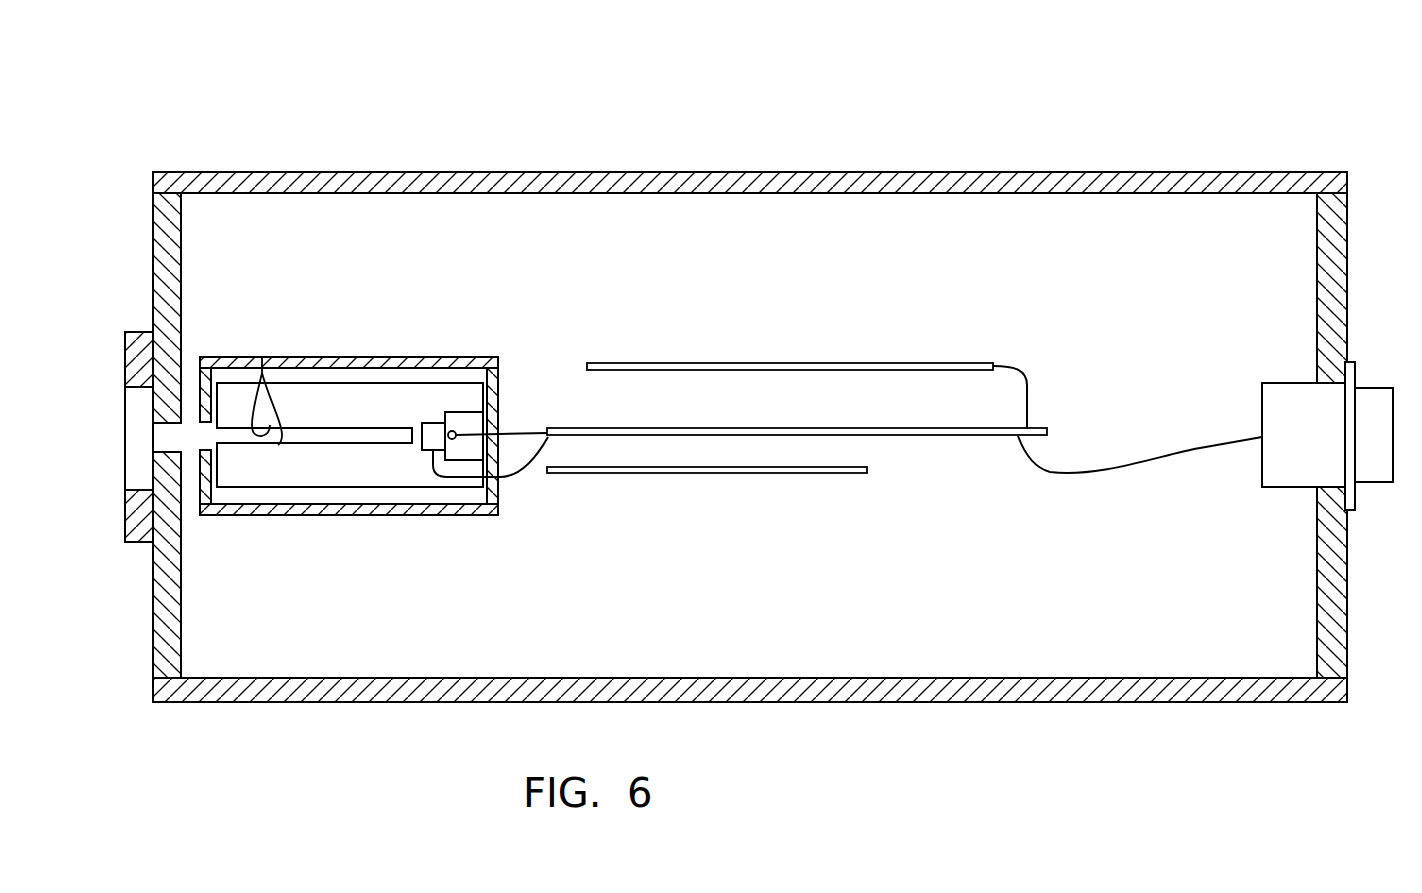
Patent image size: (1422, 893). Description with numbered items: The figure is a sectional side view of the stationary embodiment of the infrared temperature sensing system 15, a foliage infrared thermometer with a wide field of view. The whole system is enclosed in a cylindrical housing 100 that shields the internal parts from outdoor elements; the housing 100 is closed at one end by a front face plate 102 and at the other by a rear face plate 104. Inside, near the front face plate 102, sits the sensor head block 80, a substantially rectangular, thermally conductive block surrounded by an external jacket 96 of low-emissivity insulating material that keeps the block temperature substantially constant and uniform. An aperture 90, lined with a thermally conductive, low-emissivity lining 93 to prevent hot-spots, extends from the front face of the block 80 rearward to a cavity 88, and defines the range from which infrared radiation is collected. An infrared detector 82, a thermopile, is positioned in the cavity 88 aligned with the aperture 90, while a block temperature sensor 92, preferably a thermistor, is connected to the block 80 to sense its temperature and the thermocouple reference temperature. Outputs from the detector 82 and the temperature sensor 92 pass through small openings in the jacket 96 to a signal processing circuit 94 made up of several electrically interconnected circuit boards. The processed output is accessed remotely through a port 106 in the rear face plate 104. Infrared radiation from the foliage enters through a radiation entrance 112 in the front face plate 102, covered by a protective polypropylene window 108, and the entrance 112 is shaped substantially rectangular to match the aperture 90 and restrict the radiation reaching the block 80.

The infrared temperature sensing system 15 is at (1036, 120).
The sensor head block 80 is at (380, 506).
The infrared detector 82 is at (440, 423).
The cavity 88 is at (470, 418).
The aperture 90 is at (336, 432).
The block temperature sensor 92 is at (455, 430).
The lining 93 is at (262, 357).
The signal processing circuit 94 is at (868, 363).
The external jacket 96 is at (350, 357).
The cylindrical housing 100 is at (968, 703).
The front face plate 102 is at (153, 298).
The rear face plate 104 is at (1340, 293).
The port 106 is at (1380, 470).
The window 108 is at (137, 368).
The radiation entrance 112 is at (163, 437).